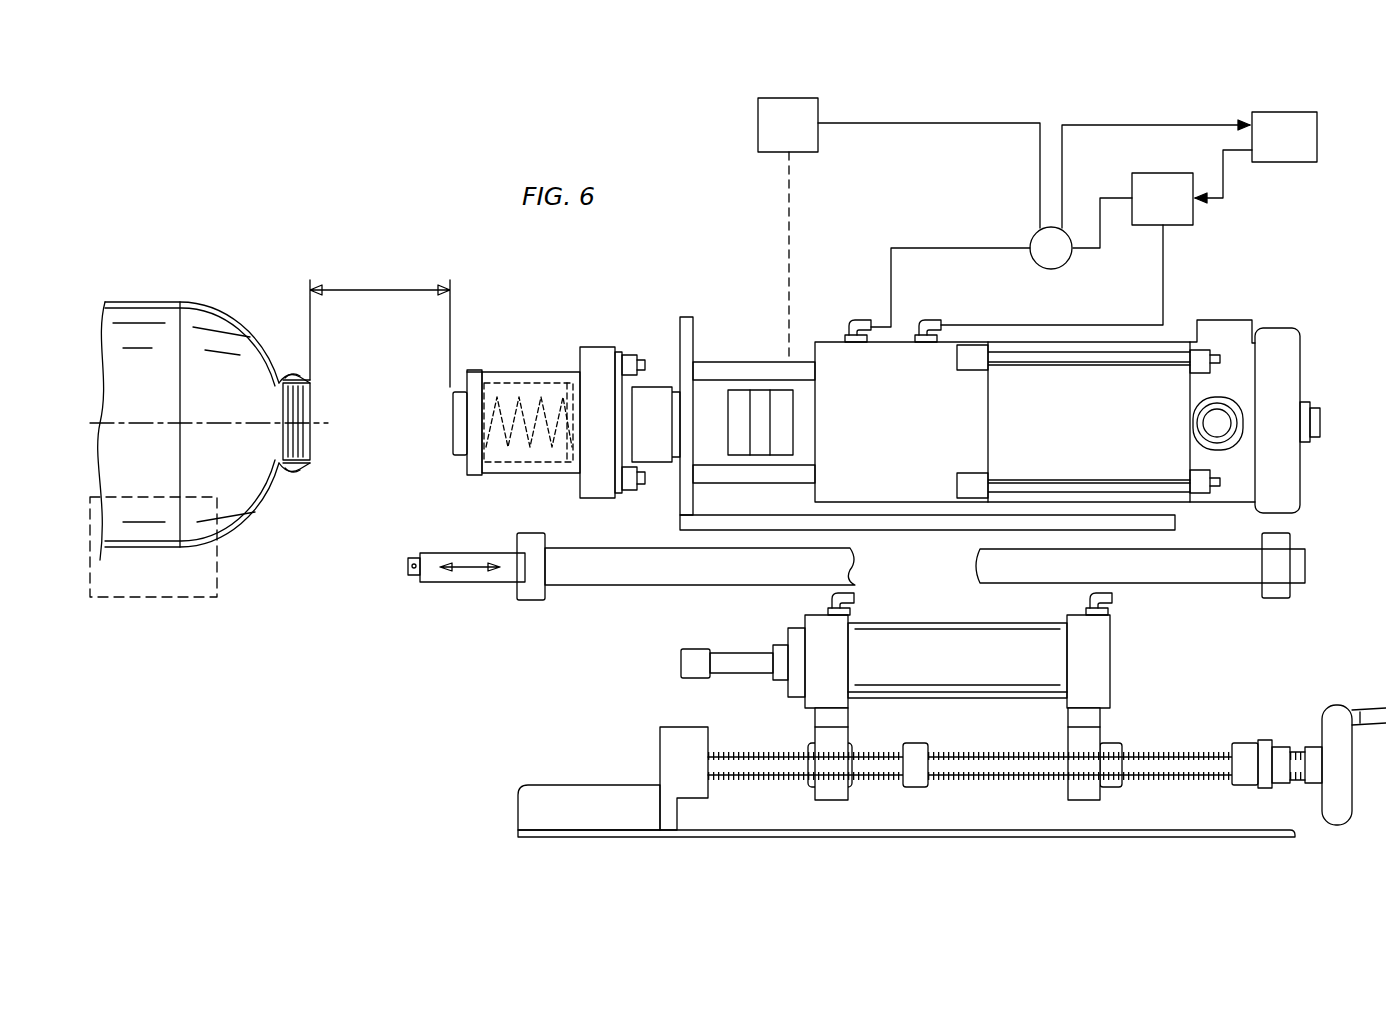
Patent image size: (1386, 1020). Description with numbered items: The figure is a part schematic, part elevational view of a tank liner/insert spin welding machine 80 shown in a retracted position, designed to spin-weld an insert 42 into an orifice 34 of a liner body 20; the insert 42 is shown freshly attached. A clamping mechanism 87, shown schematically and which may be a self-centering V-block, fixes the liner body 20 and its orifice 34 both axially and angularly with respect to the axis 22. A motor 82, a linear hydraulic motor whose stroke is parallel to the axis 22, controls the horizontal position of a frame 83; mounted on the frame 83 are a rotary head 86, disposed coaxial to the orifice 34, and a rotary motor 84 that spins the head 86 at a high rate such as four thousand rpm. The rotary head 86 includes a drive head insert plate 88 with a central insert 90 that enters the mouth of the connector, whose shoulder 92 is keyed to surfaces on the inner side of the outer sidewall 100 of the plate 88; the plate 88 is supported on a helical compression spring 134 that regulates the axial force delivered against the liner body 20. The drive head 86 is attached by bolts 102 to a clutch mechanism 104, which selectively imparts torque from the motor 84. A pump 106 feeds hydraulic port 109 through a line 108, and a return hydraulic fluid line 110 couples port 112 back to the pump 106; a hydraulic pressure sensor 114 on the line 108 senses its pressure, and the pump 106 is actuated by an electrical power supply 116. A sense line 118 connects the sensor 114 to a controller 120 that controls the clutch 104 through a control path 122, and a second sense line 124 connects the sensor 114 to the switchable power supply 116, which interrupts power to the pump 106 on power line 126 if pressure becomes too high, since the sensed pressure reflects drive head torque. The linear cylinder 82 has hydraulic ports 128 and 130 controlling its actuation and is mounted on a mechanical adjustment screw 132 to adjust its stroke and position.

The liner body 20 is at (156, 296).
The axis 22 is at (216, 432).
The orifice 34 is at (259, 404).
The insert 42 is at (304, 382).
The shoulder 92 is at (306, 470).
The clamping mechanism 87 is at (152, 598).
The machine 80 is at (865, 239).
The motor 82 is at (940, 622).
The frame 83 is at (600, 586).
The rotary motor 84 is at (1226, 319).
The rotary head 86 is at (556, 371).
The drive head insert plate 88 is at (466, 470).
The central insert 90 is at (452, 412).
The outer sidewall 100 is at (476, 371).
The bolts 102 is at (633, 357).
The clutch mechanism 104 is at (742, 362).
The pump 106 is at (1162, 199).
The line 108 is at (922, 248).
The hydraulic port 109 is at (856, 320).
The return hydraulic fluid line 110 is at (995, 341).
The hydraulic port 112 is at (926, 320).
The hydraulic pressure sensor 114 is at (1035, 236).
The electrical power supply 116 is at (1284, 137).
The sense line 118 is at (933, 123).
The controller 120 is at (788, 125).
The control path 122 is at (787, 256).
The sense line 124 is at (1157, 125).
The power line 126 is at (1228, 188).
The hydraulic port 128 is at (1116, 598).
The hydraulic port 130 is at (858, 598).
The mechanical adjustment screw 132 is at (1160, 750).
The helical compression spring 134 is at (541, 450).